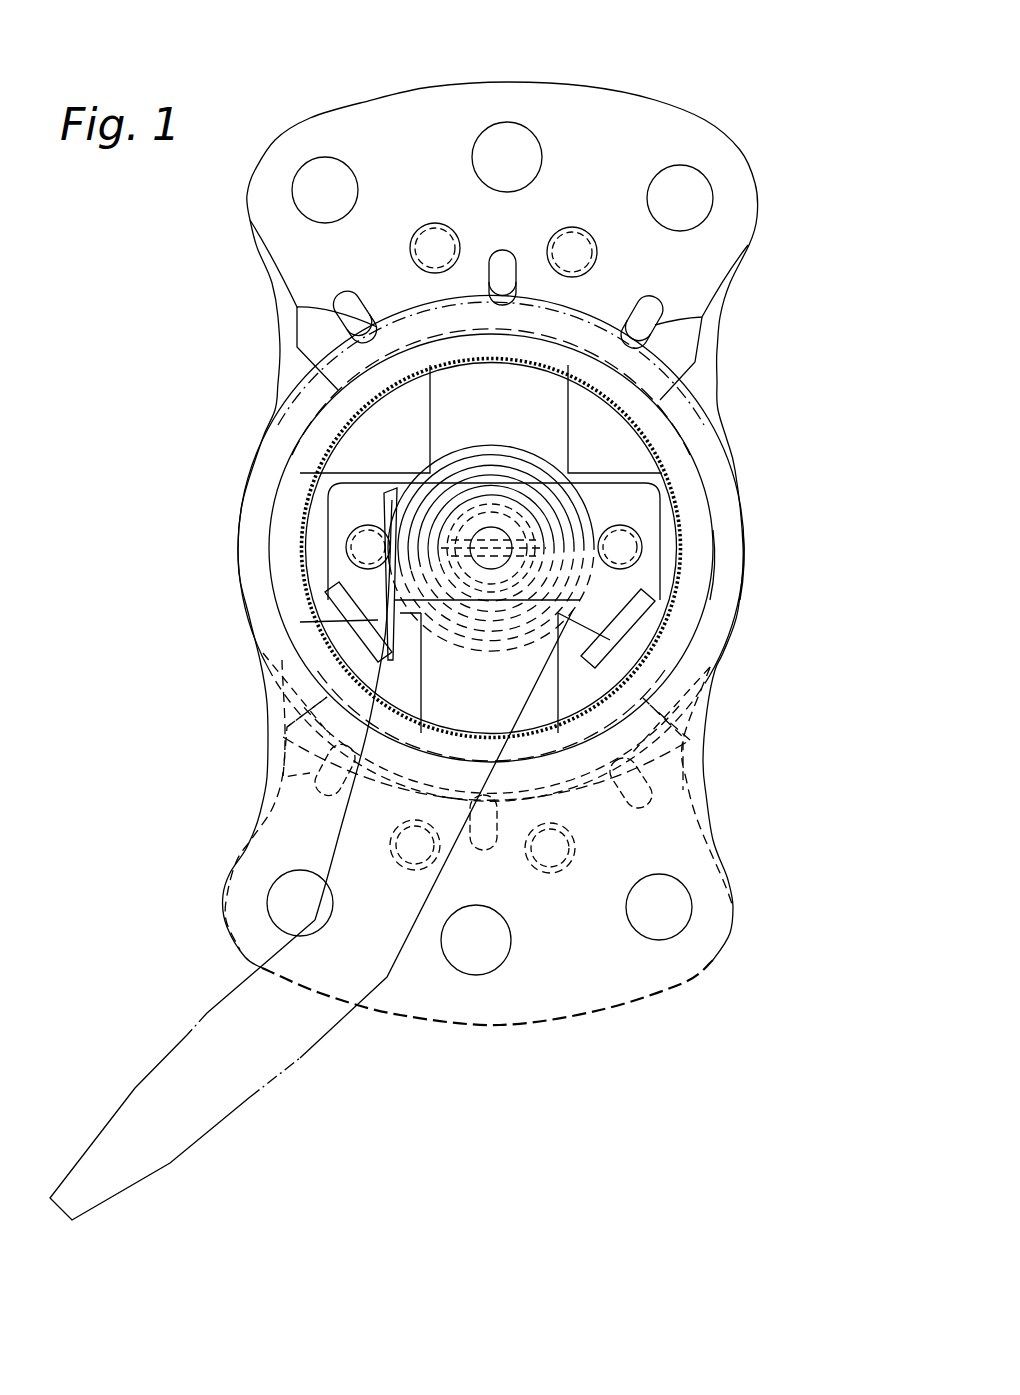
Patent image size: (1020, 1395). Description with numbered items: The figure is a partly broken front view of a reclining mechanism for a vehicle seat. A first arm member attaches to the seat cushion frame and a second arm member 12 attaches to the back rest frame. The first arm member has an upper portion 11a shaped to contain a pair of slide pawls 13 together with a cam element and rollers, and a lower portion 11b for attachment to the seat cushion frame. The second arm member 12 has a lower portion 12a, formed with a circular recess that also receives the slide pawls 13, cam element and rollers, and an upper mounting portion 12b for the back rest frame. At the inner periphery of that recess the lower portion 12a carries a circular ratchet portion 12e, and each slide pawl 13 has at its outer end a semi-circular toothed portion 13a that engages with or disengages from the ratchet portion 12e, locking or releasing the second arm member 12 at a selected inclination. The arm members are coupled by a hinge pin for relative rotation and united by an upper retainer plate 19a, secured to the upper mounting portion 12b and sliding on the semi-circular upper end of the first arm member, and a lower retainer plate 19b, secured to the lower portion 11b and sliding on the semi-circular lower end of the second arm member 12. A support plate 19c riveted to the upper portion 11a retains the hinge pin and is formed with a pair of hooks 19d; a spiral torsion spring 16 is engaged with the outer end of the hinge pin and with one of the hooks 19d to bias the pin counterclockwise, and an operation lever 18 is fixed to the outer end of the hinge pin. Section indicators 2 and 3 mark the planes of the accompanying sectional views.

The section line 2- 2 is at (514, 72).
The section line 3- 3 is at (228, 547).
The upper portion 11a is at (728, 597).
The lower portion 11b is at (697, 810).
The second arm member 12 is at (722, 335).
The lower portion 12a is at (797, 573).
The upper mounting portion 12b is at (710, 397).
The circular ratchet portion 12e is at (645, 660).
The slide pawls 13 is at (432, 405).
The semi-circular toothed portion 13a is at (607, 766).
The spiral torsion spring 16 is at (397, 497).
The operation lever 18 is at (232, 1023).
The upper retainer plate 19a is at (655, 127).
The lower retainer plate 19b is at (712, 935).
The support plate 19c is at (650, 503).
The hooks 19d is at (327, 614).